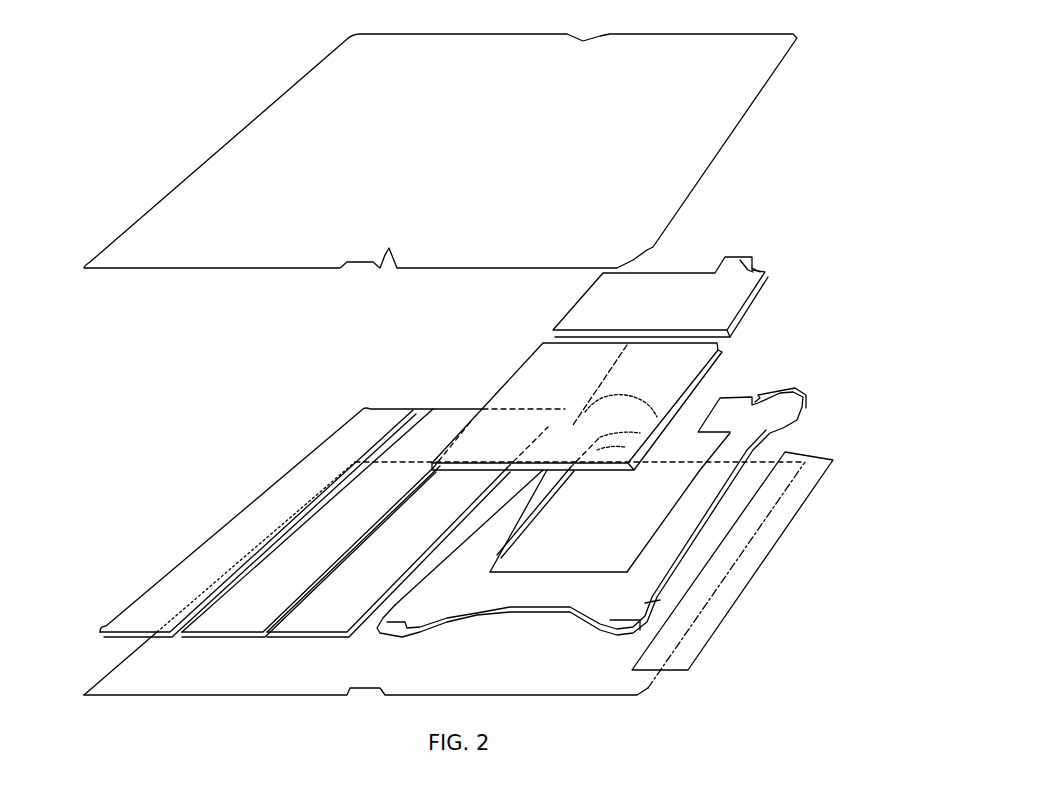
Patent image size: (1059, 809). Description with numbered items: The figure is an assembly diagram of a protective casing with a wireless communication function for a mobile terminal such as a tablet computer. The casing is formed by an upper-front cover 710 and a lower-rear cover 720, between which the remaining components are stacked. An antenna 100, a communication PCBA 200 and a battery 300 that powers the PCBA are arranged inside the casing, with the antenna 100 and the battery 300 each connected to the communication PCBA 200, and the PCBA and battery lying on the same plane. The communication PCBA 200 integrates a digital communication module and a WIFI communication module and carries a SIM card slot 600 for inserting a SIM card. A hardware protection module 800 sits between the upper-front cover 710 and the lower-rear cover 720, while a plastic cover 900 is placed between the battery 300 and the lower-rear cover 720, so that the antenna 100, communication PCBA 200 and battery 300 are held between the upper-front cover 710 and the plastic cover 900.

The upper-front cover 710 is at (230, 163).
The SIM card slot 600 is at (733, 263).
The communication PCBA 200 is at (730, 300).
The battery 300 is at (702, 372).
The hardware protection module 800 is at (443, 422).
The plastic cover 900 is at (787, 425).
The antenna 100 is at (750, 577).
The lower-rear cover 720 is at (132, 677).